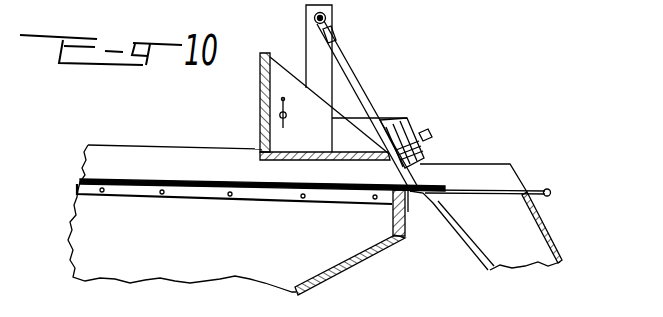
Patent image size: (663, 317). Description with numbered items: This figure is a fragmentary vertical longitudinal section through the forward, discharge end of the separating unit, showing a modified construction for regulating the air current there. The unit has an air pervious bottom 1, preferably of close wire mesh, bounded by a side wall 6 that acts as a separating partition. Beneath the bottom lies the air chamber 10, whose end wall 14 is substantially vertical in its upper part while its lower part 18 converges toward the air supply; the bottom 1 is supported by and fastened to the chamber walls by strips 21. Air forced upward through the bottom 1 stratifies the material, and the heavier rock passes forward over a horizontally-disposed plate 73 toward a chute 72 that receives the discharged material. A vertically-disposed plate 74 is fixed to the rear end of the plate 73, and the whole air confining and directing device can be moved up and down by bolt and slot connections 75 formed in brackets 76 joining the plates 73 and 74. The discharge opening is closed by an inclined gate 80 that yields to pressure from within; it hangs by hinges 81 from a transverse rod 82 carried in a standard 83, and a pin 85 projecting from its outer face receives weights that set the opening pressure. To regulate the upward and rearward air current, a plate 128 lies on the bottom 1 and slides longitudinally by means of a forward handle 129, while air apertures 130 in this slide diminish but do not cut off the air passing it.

The air pervious bottom 1 is at (195, 197).
The side wall (separating partition) 6 is at (158, 144).
The air chamber 10 is at (120, 250).
The end wall 14 is at (406, 222).
The lower part of end wall 18 is at (338, 277).
The strips 21 is at (118, 197).
The chute 72 is at (543, 224).
The horizontally-disposed plate 73 is at (326, 152).
The vertically-disposed wall or plate 74 is at (262, 78).
The bolt and slot connections 75 is at (279, 116).
The plates or brackets 76 is at (308, 100).
The gate 80 is at (356, 79).
The hinges 81 is at (334, 28).
The rod 82 is at (318, 26).
The standard 83 is at (334, 15).
The pin 85 is at (418, 136).
The plate (slide) 128 is at (433, 184).
The handle 129 is at (500, 192).
The air apertures 130 is at (362, 181).